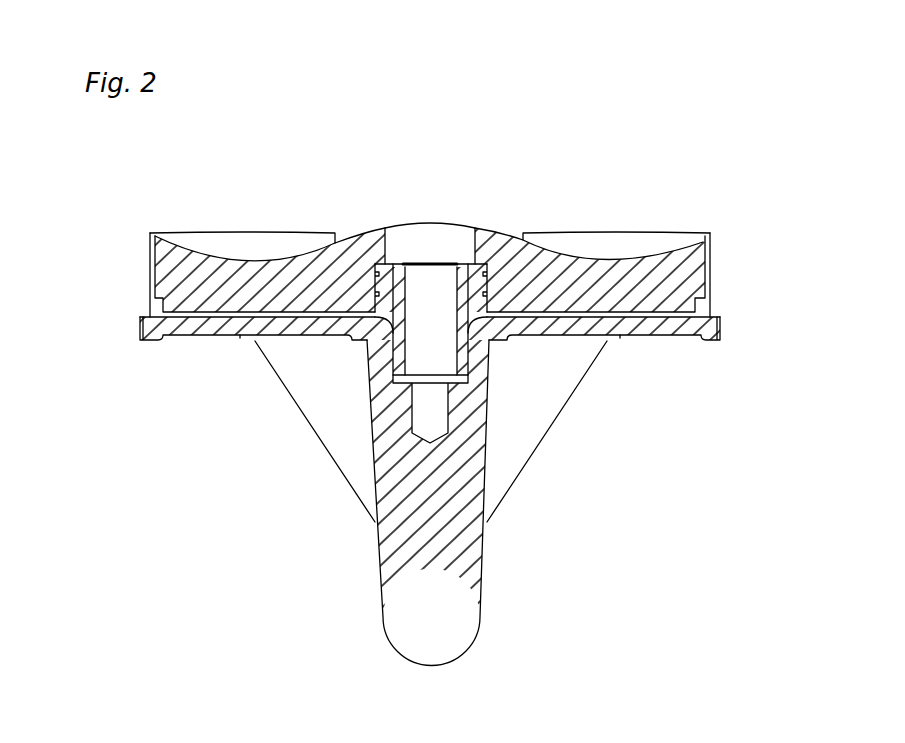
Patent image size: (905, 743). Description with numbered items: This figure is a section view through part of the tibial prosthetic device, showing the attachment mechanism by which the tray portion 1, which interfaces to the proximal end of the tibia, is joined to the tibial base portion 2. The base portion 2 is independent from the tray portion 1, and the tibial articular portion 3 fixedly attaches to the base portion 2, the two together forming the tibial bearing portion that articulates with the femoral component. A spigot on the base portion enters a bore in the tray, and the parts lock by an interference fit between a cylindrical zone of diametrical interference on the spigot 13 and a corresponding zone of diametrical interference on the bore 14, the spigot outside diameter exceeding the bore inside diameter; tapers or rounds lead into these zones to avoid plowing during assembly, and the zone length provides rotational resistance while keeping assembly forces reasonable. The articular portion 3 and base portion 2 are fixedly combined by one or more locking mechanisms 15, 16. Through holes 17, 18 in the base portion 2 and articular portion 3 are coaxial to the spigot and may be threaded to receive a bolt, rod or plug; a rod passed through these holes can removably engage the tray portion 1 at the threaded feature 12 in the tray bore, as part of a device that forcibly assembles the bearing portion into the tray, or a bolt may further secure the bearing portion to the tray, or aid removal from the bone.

The tray portion 1 is at (332, 553).
The tibial base portion 2 is at (138, 307).
The tibial articular portion 3 is at (192, 277).
The threads or other feature 12 is at (420, 415).
The zone of diametrical interference on the spigot 13 is at (470, 350).
The zone of diametrical interference on the bore 14 is at (383, 345).
The locking mechanism 15 is at (493, 285).
The locking mechanism 16 is at (712, 293).
The through hole 17 is at (452, 230).
The through hole 18 is at (423, 298).